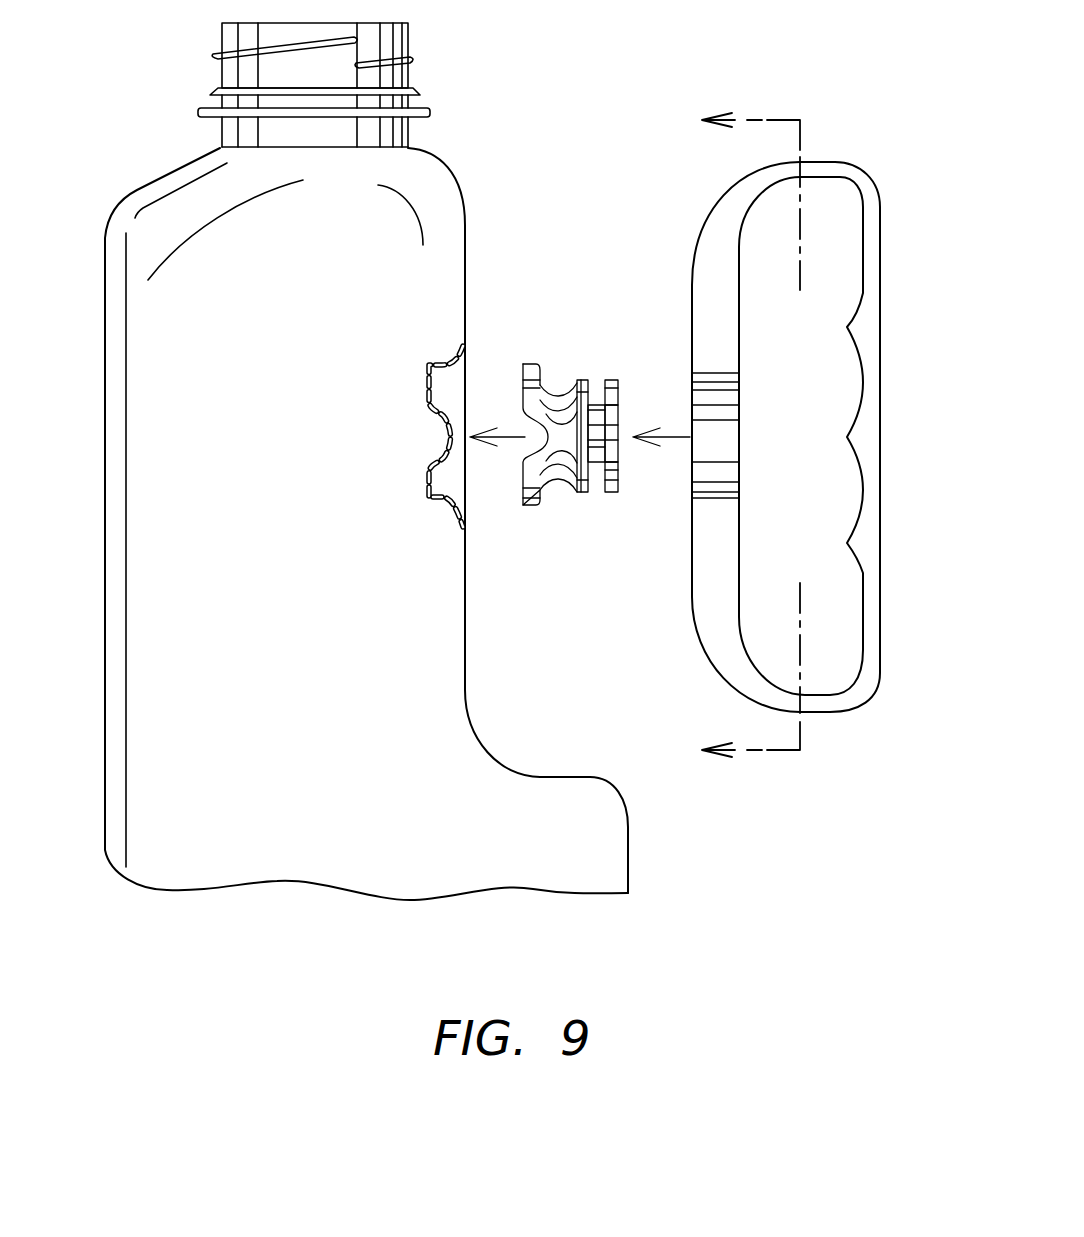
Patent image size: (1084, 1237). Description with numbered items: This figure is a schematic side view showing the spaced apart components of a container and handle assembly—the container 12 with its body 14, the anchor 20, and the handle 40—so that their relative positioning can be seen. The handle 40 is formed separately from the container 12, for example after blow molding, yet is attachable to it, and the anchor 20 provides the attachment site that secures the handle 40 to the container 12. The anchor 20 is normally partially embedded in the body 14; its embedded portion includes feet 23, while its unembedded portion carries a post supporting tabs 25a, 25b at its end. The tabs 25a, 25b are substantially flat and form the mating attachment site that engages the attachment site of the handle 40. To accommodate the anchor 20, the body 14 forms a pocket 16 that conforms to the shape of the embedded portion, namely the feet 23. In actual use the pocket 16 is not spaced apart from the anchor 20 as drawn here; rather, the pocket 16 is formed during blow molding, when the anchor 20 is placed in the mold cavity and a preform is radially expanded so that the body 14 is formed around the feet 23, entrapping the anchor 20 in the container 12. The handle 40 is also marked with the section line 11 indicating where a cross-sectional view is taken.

The container 12 is at (359, 461).
The body 14 is at (448, 168).
The pocket 16 is at (425, 363).
The anchor 20 is at (587, 420).
The feet 23 is at (525, 507).
The tab 25a is at (612, 378).
The tab 25b is at (612, 492).
The handle 40 is at (812, 162).
The section line 11- 11 is at (731, 437).